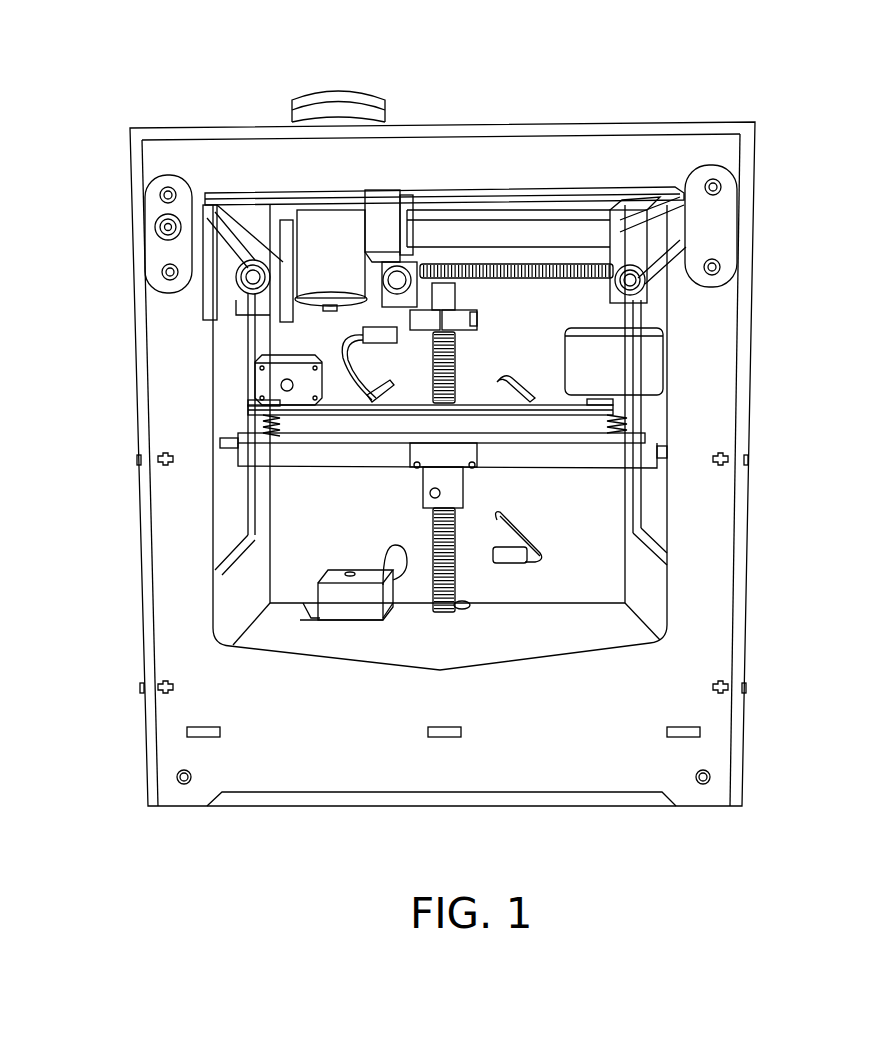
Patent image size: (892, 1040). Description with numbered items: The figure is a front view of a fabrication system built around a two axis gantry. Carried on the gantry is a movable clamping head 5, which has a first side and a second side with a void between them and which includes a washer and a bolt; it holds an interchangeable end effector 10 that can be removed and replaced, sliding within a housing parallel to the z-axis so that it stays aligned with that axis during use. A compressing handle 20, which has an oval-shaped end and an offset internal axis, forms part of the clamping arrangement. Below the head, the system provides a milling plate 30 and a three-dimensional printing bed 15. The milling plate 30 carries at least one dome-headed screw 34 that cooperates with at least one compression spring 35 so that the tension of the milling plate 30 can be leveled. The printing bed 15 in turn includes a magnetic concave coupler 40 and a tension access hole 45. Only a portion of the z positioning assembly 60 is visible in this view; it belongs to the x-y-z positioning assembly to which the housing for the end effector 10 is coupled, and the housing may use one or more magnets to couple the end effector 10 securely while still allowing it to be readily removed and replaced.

The clamping head 5 is at (328, 240).
The interchangeable end effector 10 is at (373, 122).
The 3D printing bed 15 is at (479, 408).
The compressing handle 20 is at (425, 268).
The milling plate 30 is at (504, 438).
The dome-headed screw 34 is at (268, 414).
The compression spring 35 is at (254, 410).
The magnetic concave coupler 40 is at (273, 438).
The tension access hole 45 is at (605, 402).
The z positioning assembly 60 is at (470, 562).